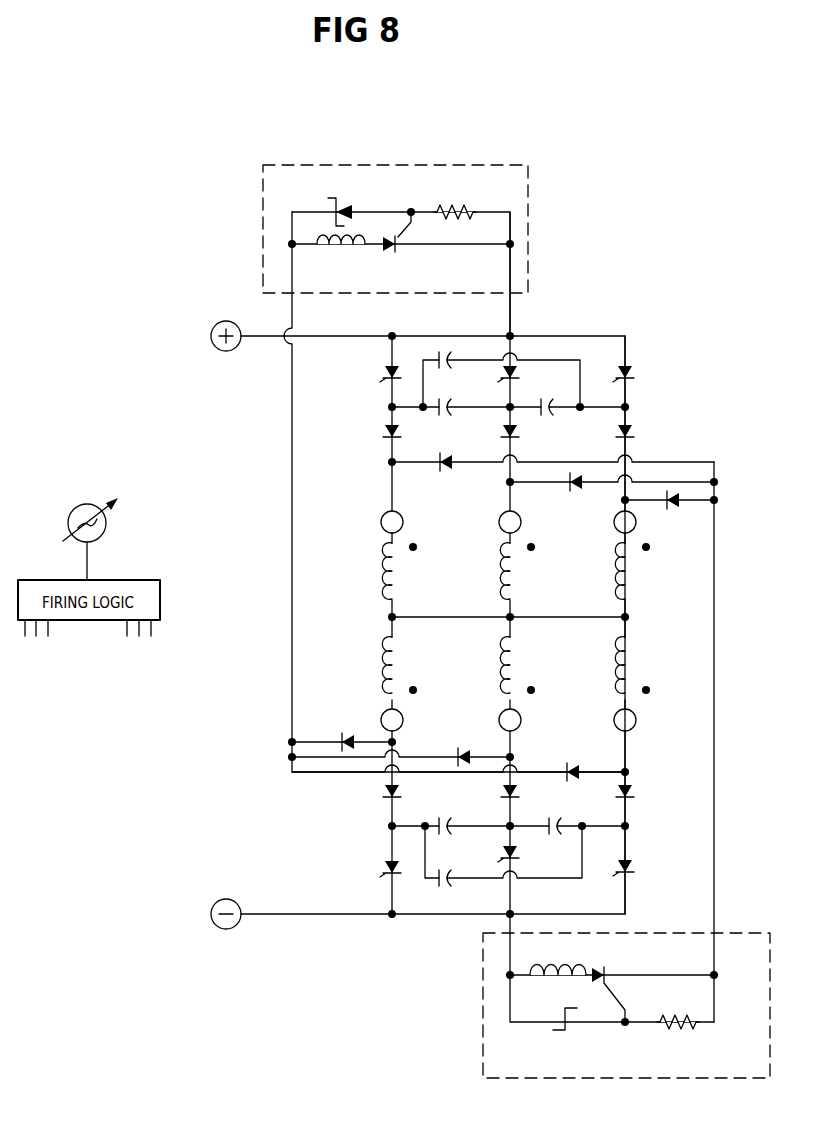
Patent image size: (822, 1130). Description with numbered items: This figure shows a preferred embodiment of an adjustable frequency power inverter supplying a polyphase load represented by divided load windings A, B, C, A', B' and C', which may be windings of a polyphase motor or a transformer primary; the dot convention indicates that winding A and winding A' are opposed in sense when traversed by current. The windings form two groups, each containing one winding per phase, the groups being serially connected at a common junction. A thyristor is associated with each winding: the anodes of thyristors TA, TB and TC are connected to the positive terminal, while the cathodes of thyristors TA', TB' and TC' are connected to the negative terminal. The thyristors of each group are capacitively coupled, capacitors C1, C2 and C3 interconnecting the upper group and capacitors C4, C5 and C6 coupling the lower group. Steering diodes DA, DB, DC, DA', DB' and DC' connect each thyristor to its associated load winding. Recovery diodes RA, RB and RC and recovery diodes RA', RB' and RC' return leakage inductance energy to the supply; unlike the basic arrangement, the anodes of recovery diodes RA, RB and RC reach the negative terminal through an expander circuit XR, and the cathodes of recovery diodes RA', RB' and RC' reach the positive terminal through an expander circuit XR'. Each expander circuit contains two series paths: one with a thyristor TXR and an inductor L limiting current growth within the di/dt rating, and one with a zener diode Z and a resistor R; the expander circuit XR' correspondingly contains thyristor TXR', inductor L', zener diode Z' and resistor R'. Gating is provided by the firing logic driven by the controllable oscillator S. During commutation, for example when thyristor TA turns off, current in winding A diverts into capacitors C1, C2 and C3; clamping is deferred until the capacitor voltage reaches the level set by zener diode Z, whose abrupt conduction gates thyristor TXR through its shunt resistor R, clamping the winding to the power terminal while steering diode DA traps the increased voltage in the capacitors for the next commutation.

The controllable oscillator S is at (87, 534).
The expander circuit XR' is at (414, 250).
The zener diode Z' is at (339, 200).
The resistor R' is at (455, 198).
The inductor L' is at (341, 254).
The thyristor TXR' is at (407, 247).
The thyristor TA is at (375, 379).
The thyristor TB is at (521, 379).
The thyristor TC is at (636, 379).
The steering diode DA is at (375, 437).
The steering diode DB is at (520, 441).
The steering diode DC is at (639, 437).
The capacitor C1 is at (501, 379).
The capacitor C2 is at (451, 417).
The capacitor C3 is at (567, 417).
The recovery diode RA is at (553, 449).
The recovery diode RB is at (612, 501).
The recovery diode RC is at (669, 511).
The load winding A is at (388, 555).
The load winding B is at (508, 555).
The load winding C is at (624, 555).
The load winding A' is at (388, 684).
The load winding B' is at (509, 684).
The load winding C' is at (624, 684).
The recovery diode RA' is at (342, 735).
The recovery diode RB' is at (401, 745).
The recovery diode RC' is at (458, 761).
The steering diode DA' is at (404, 797).
The steering diode DB' is at (522, 797).
The steering diode DC' is at (638, 797).
The capacitor C4 is at (451, 817).
The capacitor C5 is at (567, 817).
The capacitor C6 is at (503, 868).
The thyristor TA' is at (375, 878).
The thyristor TB' is at (521, 859).
The thyristor TC' is at (635, 873).
The expander circuit XR is at (645, 1005).
The inductor L is at (558, 960).
The thyristor TXR is at (611, 986).
The zener diode Z is at (565, 1032).
The resistor R is at (678, 1032).